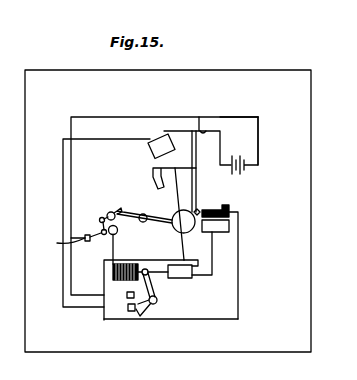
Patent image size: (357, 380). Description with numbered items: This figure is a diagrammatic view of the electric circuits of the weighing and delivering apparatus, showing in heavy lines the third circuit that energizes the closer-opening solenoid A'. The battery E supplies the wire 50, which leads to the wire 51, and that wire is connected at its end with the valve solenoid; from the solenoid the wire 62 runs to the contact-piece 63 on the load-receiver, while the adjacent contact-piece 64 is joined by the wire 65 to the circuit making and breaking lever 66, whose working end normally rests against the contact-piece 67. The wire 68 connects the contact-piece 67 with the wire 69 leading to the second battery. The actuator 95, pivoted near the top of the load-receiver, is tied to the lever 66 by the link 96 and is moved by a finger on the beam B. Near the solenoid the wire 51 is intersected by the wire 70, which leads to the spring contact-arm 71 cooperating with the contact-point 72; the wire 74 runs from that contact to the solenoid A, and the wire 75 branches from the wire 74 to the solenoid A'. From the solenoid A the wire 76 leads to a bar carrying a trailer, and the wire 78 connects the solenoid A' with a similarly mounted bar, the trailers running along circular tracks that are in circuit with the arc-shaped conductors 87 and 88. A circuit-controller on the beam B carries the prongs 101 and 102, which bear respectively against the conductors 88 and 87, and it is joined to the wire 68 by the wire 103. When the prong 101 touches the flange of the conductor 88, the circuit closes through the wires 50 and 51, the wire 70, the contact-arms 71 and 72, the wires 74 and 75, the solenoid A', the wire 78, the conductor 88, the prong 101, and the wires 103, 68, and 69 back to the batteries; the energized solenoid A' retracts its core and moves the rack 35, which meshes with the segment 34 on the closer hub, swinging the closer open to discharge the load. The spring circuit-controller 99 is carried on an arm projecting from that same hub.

The wire 50 is at (223, 120).
The wire 51 is at (208, 131).
The wire 62 is at (63, 163).
The contact-piece 63 is at (129, 311).
The contact-piece 64 is at (127, 295).
The wire 65 is at (71, 272).
The circuit-controller lever 66 is at (118, 230).
The contact-piece 67 is at (61, 245).
The wire 68 is at (176, 117).
The wire 69 is at (259, 131).
The wire 70 is at (163, 168).
The spring contact-arm 71 is at (157, 188).
The contact-point 72 is at (177, 182).
The wire 74 is at (182, 242).
The wire 75 is at (131, 260).
The wire 76 is at (212, 276).
The wire 78 is at (200, 319).
The arc-shaped conductor 87 is at (229, 225).
The arc-shaped conductor 88 is at (227, 207).
The actuator 95 is at (111, 212).
The link 96 is at (100, 219).
The spring circuit-controller 99 is at (153, 305).
The prong 101 is at (199, 210).
The prong 102 is at (190, 231).
The wire 103 is at (197, 175).
The segment 34 is at (157, 292).
The rack 35 is at (153, 265).
The solenoid A is at (183, 269).
The beam B is at (175, 217).
The battery E is at (245, 149).